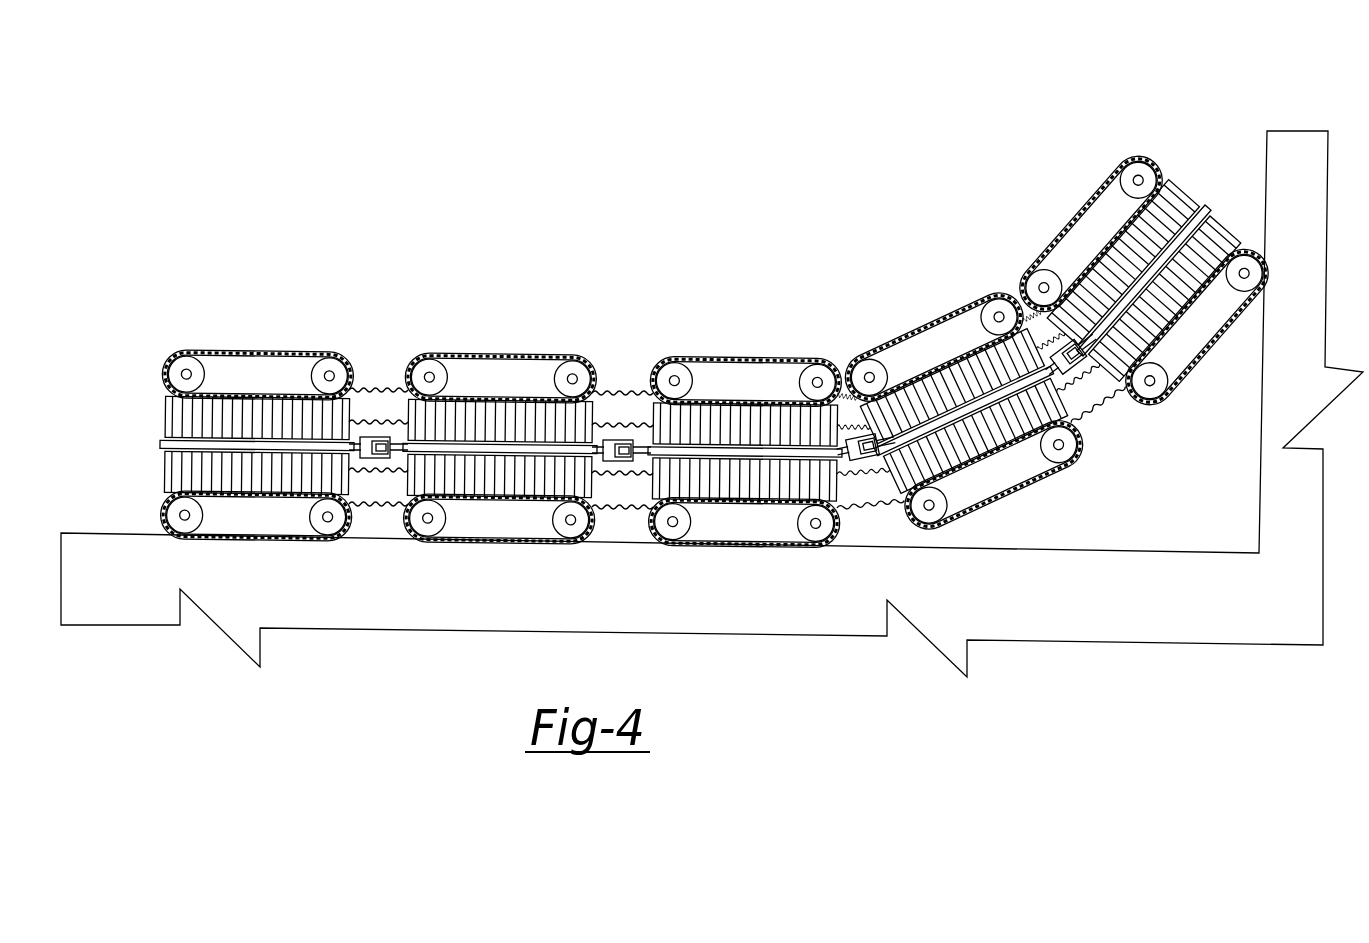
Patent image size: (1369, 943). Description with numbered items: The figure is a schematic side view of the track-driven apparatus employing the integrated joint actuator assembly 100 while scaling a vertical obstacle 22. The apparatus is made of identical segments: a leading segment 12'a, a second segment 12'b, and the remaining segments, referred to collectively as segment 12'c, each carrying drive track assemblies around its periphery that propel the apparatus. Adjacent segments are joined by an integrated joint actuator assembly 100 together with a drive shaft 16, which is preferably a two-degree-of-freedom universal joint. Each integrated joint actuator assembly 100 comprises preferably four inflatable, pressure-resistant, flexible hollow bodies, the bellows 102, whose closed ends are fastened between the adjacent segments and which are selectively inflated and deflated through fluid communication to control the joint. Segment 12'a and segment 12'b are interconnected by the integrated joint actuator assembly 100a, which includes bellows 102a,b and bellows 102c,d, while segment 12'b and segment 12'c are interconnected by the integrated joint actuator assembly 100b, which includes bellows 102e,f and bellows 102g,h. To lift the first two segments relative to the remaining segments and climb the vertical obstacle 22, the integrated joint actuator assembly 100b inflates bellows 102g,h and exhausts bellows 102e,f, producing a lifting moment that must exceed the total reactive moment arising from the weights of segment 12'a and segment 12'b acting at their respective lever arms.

The vertical obstacle 22 is at (1292, 138).
The segment 12'a is at (1144, 258).
The segment 12'b is at (978, 410).
The segment 12'c is at (501, 472).
The drive shaft 16 is at (403, 438).
The integrated joint actuator assembly 100 is at (505, 433).
The integrated joint actuator assembly 100a is at (1068, 312).
The integrated joint actuator assembly 100b is at (871, 421).
The bellows 102 is at (623, 518).
The bellows 102a,b is at (1027, 302).
The bellows 102c,d is at (1110, 413).
The bellows 102e,f is at (845, 382).
The bellows 102g,h is at (876, 531).